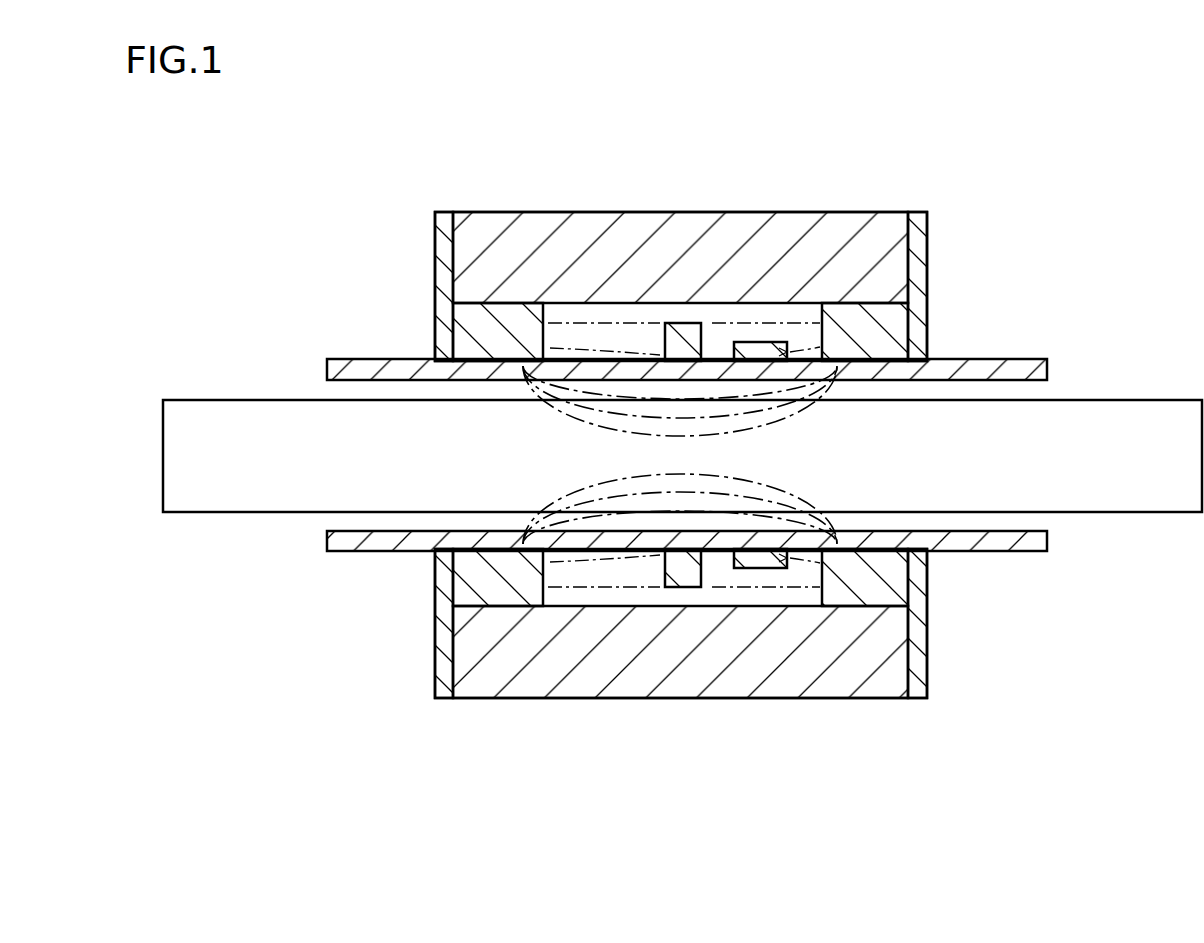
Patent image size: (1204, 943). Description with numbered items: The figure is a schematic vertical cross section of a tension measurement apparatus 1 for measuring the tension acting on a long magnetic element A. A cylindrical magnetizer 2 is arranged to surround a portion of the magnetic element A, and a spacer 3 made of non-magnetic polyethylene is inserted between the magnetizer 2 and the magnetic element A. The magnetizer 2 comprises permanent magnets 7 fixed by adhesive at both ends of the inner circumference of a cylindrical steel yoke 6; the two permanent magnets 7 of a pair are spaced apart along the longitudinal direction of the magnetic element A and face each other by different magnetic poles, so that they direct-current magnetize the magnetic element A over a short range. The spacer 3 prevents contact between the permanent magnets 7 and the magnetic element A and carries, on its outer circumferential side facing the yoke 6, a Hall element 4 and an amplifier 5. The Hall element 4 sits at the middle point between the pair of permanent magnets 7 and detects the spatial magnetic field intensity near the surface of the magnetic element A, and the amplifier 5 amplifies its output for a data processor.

The tension measurement apparatus 1 is at (915, 198).
The magnetizer 2 is at (578, 210).
The spacer 3 is at (358, 368).
The Hall element 4 is at (684, 322).
The amplifier 5 is at (755, 340).
The yoke 6 is at (727, 680).
The permanent magnet 7 is at (487, 318).
The magnetic element A is at (1165, 420).